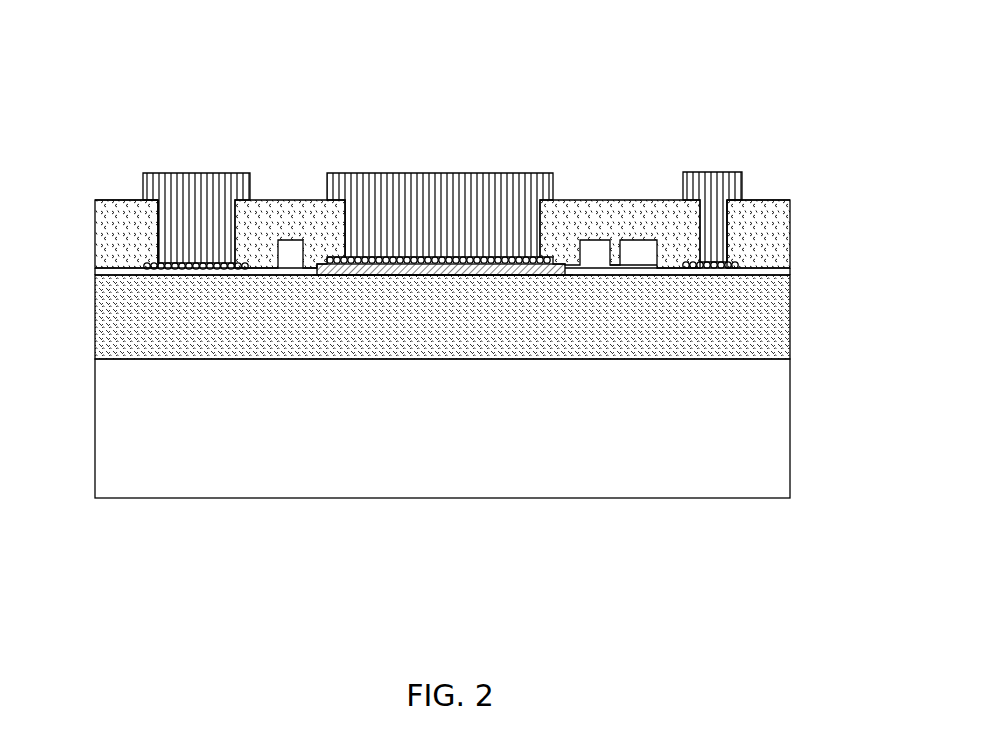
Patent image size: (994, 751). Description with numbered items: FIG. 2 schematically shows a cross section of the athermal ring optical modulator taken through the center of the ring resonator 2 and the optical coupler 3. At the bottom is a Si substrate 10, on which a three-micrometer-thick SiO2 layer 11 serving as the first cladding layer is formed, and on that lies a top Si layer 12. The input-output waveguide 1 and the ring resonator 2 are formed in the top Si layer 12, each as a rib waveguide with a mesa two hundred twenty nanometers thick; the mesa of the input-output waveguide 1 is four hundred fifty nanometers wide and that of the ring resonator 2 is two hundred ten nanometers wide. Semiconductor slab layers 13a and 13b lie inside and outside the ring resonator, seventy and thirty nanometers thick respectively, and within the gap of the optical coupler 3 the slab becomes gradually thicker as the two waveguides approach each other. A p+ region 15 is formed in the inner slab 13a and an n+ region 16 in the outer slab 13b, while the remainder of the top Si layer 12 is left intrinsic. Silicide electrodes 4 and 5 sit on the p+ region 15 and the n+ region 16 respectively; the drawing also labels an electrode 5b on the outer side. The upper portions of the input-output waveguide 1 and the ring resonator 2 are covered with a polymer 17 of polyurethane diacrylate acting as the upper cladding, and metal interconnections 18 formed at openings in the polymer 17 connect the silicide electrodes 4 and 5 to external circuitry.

The input-output waveguide 1 is at (637, 262).
The ring resonator 2 is at (292, 230).
The optical coupler 3 is at (615, 265).
The silicide electrode 4 is at (462, 250).
The silicide electrode 5 is at (170, 243).
The drain electrode 5b is at (723, 240).
The Si substrate 10 is at (757, 398).
The SiO2 layer 11 is at (727, 323).
The top Si layer 12 is at (790, 272).
The semiconductor slab layer 13a is at (313, 275).
The semiconductor slab layer 13b is at (270, 275).
The p+ region 15 is at (400, 268).
The n+ region 16 is at (750, 253).
The polymer 17 is at (98, 199).
The metal interconnection 18 is at (213, 173).